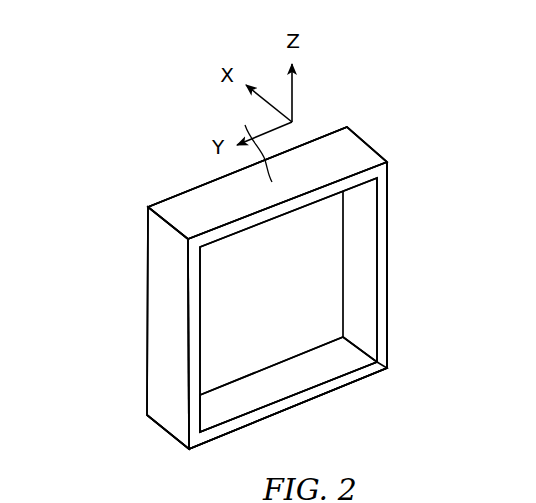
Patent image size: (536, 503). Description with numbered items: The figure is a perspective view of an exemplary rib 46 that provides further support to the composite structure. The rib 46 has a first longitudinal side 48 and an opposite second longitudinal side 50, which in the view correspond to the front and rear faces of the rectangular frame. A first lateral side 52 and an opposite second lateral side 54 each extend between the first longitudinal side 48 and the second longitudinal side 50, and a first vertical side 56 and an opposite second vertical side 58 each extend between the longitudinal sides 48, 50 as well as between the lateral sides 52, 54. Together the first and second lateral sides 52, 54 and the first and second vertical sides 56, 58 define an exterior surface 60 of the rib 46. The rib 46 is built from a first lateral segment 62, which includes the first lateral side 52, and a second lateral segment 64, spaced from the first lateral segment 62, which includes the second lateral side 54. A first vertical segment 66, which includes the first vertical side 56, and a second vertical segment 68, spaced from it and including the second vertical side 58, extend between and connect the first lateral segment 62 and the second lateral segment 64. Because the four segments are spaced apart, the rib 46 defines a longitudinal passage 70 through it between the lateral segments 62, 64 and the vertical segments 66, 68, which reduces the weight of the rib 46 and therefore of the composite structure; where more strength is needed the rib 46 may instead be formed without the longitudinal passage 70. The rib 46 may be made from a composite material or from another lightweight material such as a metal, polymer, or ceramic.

The rib 46 is at (409, 137).
The first longitudinal side 48 is at (376, 390).
The second longitudinal side 50 is at (291, 351).
The first lateral side 52 is at (139, 379).
The second lateral side 54 is at (398, 270).
The first vertical side 56 is at (151, 191).
The second vertical side 58 is at (233, 446).
The exterior surface 60 is at (325, 148).
The first lateral segment 62 is at (198, 307).
The second lateral segment 64 is at (380, 222).
The first vertical segment 66 is at (227, 228).
The second vertical segment 68 is at (322, 388).
The longitudinal passage 70 is at (273, 273).